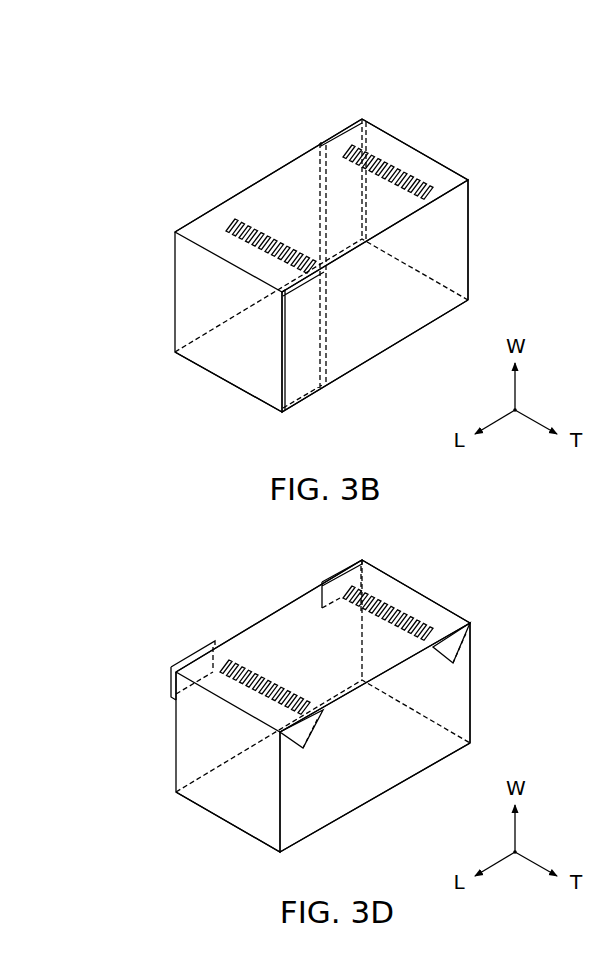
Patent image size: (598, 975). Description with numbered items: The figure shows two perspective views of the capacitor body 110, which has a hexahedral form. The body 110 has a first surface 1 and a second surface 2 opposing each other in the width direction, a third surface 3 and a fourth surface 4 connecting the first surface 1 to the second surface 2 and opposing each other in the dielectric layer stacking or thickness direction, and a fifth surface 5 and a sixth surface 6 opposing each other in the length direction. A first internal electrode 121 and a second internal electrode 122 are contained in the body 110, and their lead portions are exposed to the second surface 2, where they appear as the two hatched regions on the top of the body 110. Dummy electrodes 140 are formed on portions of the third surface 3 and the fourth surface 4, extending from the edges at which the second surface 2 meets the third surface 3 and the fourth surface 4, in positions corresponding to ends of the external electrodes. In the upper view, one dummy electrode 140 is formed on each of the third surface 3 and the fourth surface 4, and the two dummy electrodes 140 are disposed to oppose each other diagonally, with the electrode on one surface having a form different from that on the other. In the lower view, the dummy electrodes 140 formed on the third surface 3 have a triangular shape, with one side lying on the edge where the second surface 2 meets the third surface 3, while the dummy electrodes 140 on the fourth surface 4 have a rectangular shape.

In FIG. 3B, the body 110 is at (321, 256).
In FIG. 3D, the body 110 is at (323, 698).
In FIG. 3B, the first surface 1 is at (351, 313).
In FIG. 3D, the first surface 1 is at (351, 755).
In FIG. 3B, the second surface 2 is at (308, 193).
In FIG. 3D, the second surface 2 is at (308, 635).
In FIG. 3B, the third surface 3 is at (382, 298).
In FIG. 3D, the third surface 3 is at (382, 740).
In FIG. 3B, the fourth surface 4 is at (275, 216).
In FIG. 3D, the fourth surface 4 is at (275, 657).
In FIG. 3B, the fifth surface 5 is at (242, 330).
In FIG. 3D, the fifth surface 5 is at (242, 771).
In FIG. 3B, the sixth surface 6 is at (395, 195).
In FIG. 3D, the sixth surface 6 is at (396, 636).
In FIG. 3B, the first internal electrode 121 is at (351, 149).
In FIG. 3D, the first internal electrode 121 is at (351, 589).
In FIG. 3B, the second internal electrode 122 is at (231, 226).
In FIG. 3D, the second internal electrode 122 is at (227, 667).
In FIG. 3B, the dummy electrodes 140 is at (348, 140).
In FIG. 3D, the dummy electrodes 140 is at (190, 657).